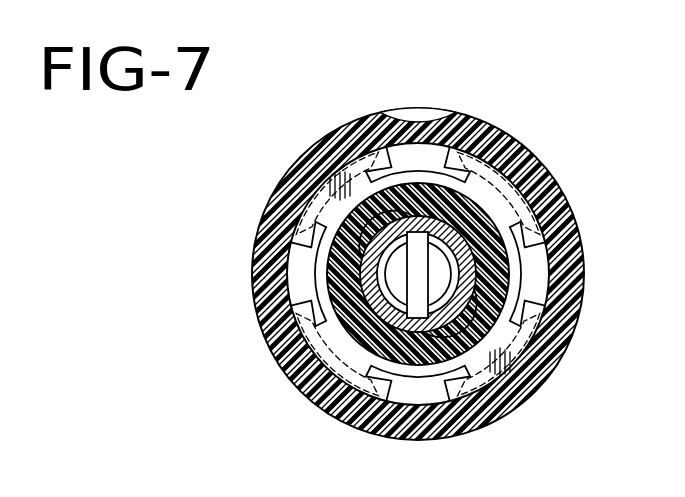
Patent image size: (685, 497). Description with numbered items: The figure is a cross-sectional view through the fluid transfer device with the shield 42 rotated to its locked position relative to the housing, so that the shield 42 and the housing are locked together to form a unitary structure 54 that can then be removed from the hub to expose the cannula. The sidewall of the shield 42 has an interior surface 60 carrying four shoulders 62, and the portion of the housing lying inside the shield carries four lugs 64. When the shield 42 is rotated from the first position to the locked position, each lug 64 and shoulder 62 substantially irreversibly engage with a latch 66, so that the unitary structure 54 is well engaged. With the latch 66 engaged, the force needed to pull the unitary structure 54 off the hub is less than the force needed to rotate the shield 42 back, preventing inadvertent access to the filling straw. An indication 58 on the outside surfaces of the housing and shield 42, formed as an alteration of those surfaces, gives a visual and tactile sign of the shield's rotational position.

The shield 42 is at (274, 192).
The unitary structure 54 is at (254, 306).
The indication 58 is at (432, 118).
The interior surface 60 is at (290, 272).
The shoulder 62 is at (341, 143).
The lug 64 is at (300, 176).
The latch 66 is at (338, 392).